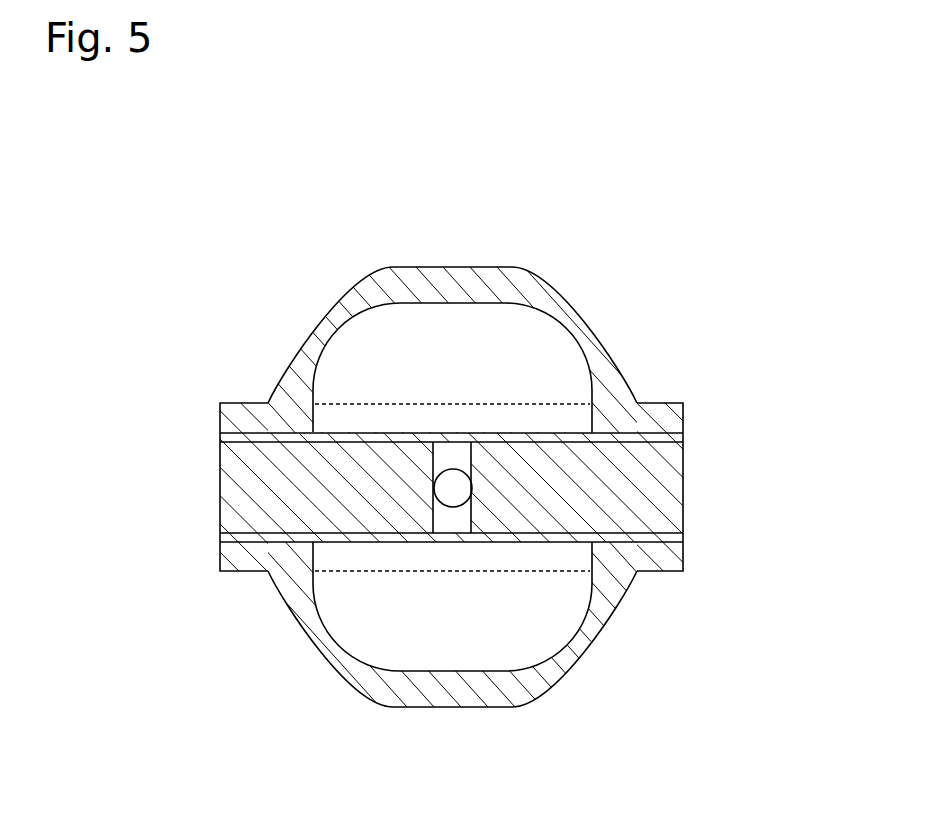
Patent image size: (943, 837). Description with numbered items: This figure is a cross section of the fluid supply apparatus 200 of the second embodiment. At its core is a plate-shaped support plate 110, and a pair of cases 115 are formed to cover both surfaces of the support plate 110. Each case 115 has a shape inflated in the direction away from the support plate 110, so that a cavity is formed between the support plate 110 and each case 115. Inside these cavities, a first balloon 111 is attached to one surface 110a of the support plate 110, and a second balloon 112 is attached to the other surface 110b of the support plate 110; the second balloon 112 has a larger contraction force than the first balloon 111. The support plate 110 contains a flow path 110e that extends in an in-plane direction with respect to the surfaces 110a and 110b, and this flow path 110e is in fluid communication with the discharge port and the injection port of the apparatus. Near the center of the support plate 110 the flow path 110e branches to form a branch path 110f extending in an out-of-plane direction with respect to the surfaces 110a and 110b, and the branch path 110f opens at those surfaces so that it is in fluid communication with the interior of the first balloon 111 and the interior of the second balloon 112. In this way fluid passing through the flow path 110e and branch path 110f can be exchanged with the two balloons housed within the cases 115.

The fluid supply apparatus 200 is at (657, 357).
The support plate 110 is at (665, 472).
The one surface 110a is at (358, 437).
The other surface 110b is at (602, 533).
The flow path 110e is at (455, 468).
The branch path 110f is at (435, 463).
The first balloon 111 is at (402, 432).
The second balloon 112 is at (483, 540).
The case 115 is at (470, 282).